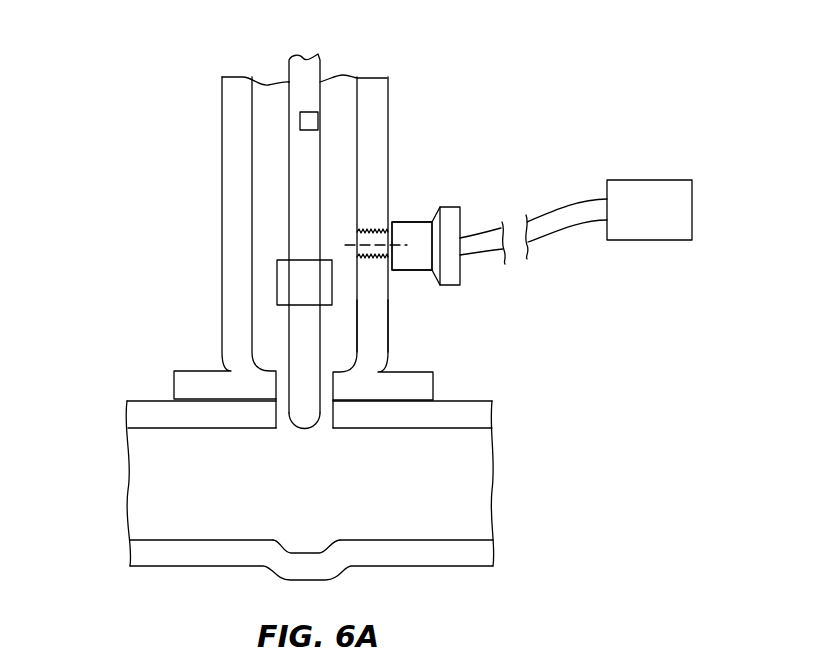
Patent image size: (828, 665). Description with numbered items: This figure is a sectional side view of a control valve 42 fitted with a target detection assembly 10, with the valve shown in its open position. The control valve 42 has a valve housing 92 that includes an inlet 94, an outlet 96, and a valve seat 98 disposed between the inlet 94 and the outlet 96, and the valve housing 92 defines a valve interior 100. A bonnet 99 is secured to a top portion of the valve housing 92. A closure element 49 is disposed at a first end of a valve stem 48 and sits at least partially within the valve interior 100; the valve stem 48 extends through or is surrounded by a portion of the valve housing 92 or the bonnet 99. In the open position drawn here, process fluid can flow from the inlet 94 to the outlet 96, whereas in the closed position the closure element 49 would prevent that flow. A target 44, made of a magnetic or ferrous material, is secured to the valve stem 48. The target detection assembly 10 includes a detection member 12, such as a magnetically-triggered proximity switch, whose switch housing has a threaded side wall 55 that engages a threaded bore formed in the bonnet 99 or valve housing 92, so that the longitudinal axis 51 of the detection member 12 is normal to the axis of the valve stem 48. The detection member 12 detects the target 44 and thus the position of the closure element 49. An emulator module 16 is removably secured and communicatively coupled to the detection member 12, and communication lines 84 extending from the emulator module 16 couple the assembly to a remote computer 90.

The control valve 42 is at (421, 38).
The target 44 is at (318, 122).
The valve stem 48 is at (290, 185).
The closure element 49 is at (290, 325).
The side wall 55 is at (380, 231).
The detection member 12 is at (365, 232).
The target detection assembly 10 is at (413, 195).
The emulator module 16 is at (420, 220).
The longitudinal axis 51 is at (345, 245).
The bonnet 99 is at (375, 343).
The communication lines 84 is at (487, 250).
The remote computer 90 is at (651, 240).
The valve housing 92 is at (467, 413).
The valve interior 100 is at (141, 443).
The inlet 94 is at (160, 481).
The outlet 96 is at (467, 466).
The valve seat 98 is at (283, 548).